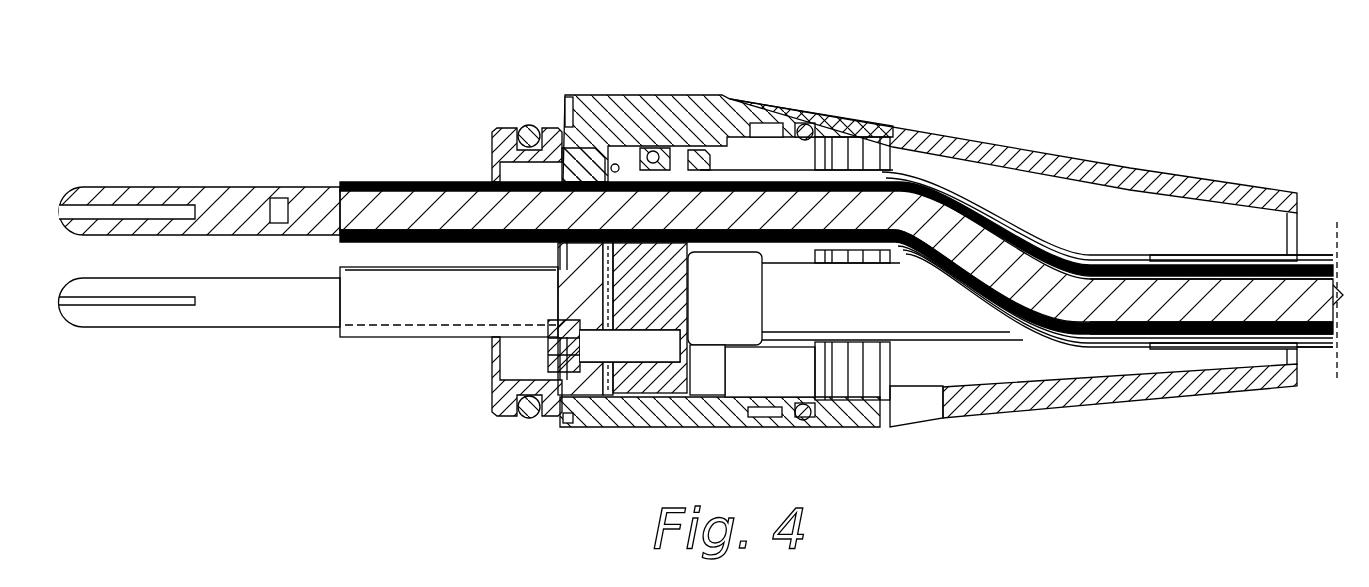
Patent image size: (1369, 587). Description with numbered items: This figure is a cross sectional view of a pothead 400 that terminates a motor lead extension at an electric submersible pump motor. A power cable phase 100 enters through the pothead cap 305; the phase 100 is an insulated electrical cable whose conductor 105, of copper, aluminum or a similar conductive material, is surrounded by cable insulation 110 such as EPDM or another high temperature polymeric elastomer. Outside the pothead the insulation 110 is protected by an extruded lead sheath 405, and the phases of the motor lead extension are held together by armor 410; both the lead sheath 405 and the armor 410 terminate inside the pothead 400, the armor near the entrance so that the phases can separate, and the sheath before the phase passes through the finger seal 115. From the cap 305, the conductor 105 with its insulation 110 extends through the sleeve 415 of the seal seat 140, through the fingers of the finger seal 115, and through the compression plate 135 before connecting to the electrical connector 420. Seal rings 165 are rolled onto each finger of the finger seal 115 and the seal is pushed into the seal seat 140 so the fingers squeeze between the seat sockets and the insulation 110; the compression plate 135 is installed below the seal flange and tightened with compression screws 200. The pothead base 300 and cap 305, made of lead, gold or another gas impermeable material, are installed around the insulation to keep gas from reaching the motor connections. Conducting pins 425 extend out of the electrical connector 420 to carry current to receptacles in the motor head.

The power cable phase 100 is at (454, 162).
The conductor 105 is at (1218, 310).
The cable insulation 110 is at (1305, 337).
The finger seal 115 is at (660, 262).
The compression plate 135 is at (585, 150).
The seal seat 140 is at (648, 150).
The seal ring 165 is at (614, 163).
The compression screw 200 is at (630, 250).
The pothead base 300 is at (680, 115).
The pothead cap 305 is at (1203, 190).
The pothead 400 is at (1102, 126).
The lead sheath 405 is at (1140, 336).
The armor 410 is at (1212, 347).
The sleeve 415 is at (715, 165).
The electrical connector 420 is at (352, 213).
The conducting pin 425 is at (230, 207).